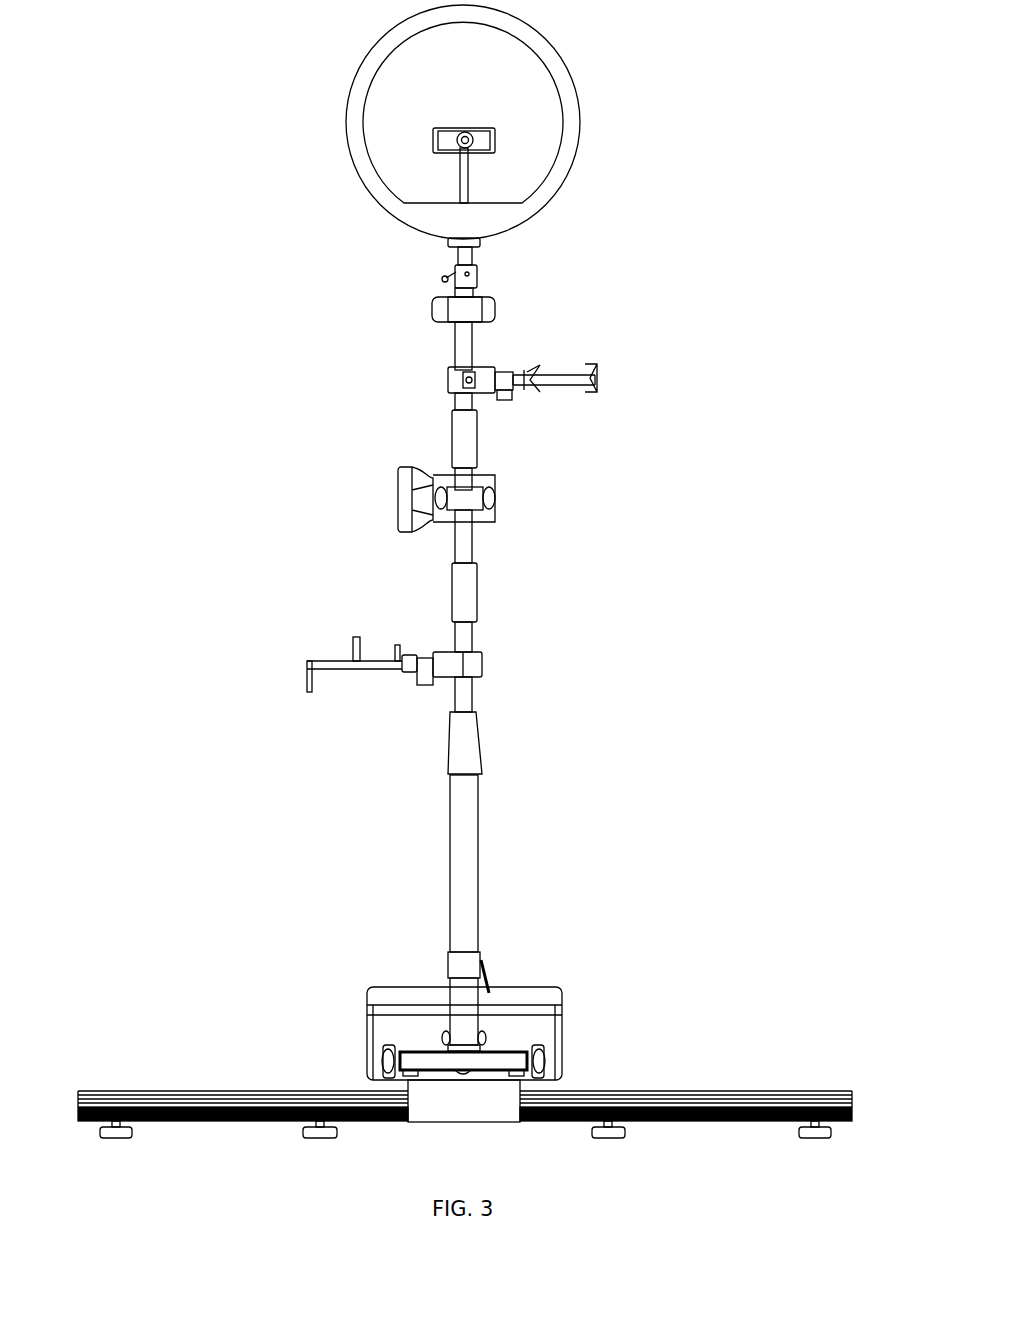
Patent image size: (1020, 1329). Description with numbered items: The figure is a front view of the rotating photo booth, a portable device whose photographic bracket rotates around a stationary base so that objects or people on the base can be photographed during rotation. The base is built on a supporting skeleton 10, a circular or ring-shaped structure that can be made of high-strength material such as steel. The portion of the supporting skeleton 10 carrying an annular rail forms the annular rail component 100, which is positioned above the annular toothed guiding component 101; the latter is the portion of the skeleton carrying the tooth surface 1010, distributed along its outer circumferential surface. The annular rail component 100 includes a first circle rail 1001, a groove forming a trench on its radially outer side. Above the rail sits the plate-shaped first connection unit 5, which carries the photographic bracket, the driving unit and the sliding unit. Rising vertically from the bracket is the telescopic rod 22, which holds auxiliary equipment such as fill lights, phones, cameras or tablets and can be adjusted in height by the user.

The telescopic rod 22 is at (477, 842).
The first connection unit 5 is at (428, 1063).
The supporting skeleton 10 is at (474, 1062).
The annular rail component 100 is at (492, 1062).
The first circle rail 1001 is at (686, 1093).
The tooth surface 1010 is at (673, 1123).
The annular toothed guiding component 101 is at (212, 1122).